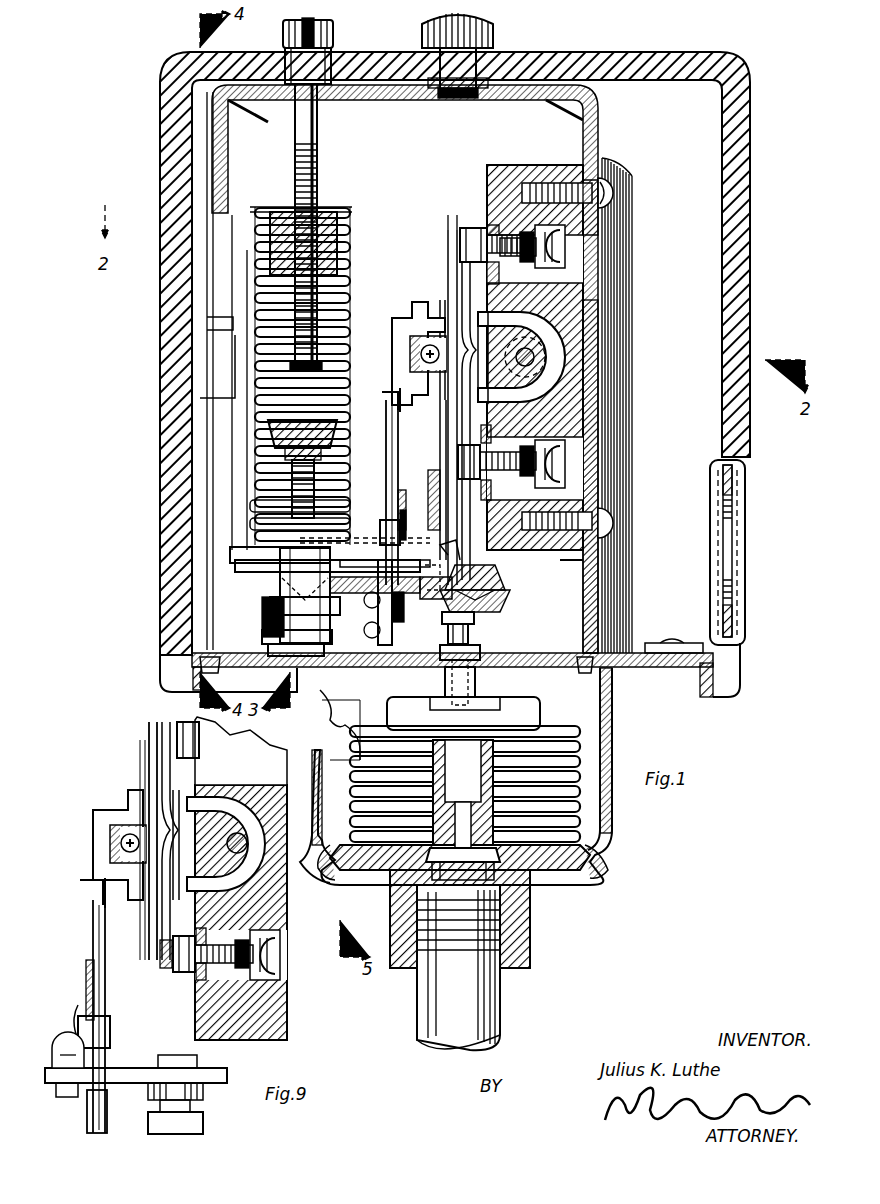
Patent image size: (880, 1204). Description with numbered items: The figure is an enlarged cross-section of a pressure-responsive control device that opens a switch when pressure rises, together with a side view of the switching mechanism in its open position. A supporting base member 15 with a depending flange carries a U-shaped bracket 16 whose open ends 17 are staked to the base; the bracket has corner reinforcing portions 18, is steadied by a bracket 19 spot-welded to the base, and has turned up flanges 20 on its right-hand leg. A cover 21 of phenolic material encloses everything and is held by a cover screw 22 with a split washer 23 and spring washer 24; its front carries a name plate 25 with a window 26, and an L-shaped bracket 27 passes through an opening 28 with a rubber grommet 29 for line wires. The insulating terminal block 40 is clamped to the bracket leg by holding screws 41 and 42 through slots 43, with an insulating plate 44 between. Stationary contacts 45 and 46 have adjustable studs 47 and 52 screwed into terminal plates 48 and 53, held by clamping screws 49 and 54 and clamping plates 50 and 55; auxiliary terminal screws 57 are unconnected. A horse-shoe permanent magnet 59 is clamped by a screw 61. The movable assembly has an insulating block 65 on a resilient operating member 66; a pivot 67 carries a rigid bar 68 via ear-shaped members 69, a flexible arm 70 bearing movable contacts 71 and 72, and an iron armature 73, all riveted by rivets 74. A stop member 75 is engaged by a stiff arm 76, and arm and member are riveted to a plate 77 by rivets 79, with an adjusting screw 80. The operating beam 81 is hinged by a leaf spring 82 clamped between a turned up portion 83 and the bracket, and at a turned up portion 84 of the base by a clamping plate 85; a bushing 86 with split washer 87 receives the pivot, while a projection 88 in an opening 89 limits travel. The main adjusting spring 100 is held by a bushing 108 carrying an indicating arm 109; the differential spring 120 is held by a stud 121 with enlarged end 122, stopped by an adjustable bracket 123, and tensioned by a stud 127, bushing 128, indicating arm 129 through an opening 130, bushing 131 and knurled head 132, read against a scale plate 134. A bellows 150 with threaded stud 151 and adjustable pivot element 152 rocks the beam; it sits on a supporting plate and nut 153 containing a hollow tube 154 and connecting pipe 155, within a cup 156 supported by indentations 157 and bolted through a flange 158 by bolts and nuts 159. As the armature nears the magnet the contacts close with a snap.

In FIG. 1, the supporting base member 15 is at (310, 665).
In FIG. 1, the U-shaped bracket 16 is at (392, 100).
In FIG. 1, the open ends of bracket 17 is at (215, 672).
In FIG. 1, the reinforcing portions 18 is at (252, 112).
In FIG. 1, the bracket 19 is at (575, 560).
In FIG. 1, the turned up flanges 20 is at (612, 323).
In FIG. 1, the housing or cover 21 is at (660, 58).
In FIG. 1, the cover screw 22 is at (470, 22).
In FIG. 1, the split washer 23 is at (448, 98).
In FIG. 1, the spring washer 24 is at (492, 58).
In FIG. 1, the ornamental name plate 25 is at (172, 120).
In FIG. 1, the window 26 is at (200, 330).
In FIG. 1, the L-shaped bracket 27 is at (696, 645).
In FIG. 1, the opening 28 is at (748, 462).
In FIG. 1, the rubber grommet 29 is at (735, 526).
In FIG. 1, the terminal block 40 is at (524, 170).
In FIG. 9, the terminal block 40 is at (272, 1020).
In FIG. 1, the holding screw 41 is at (606, 190).
In FIG. 1, the holding screw 42 is at (606, 526).
In FIG. 1, the enlarged openings or slots 43 is at (598, 218).
In FIG. 1, the insulating plate 44 is at (585, 168).
In FIG. 1, the stationary contact 45 is at (462, 228).
In FIG. 9, the stationary contact 45 is at (200, 740).
In FIG. 1, the stationary contact 46 is at (462, 480).
In FIG. 9, the stationary contact 46 is at (178, 974).
In FIG. 1, the threaded adjustable stud 47 is at (495, 232).
In FIG. 1, the terminal plate 48 is at (487, 272).
In FIG. 1, the clamping screw 49 is at (566, 248).
In FIG. 1, the clamping plate 50 is at (575, 275).
In FIG. 1, the threaded stud 52 is at (472, 520).
In FIG. 1, the terminal plate 53 is at (481, 470).
In FIG. 9, the terminal plate 53 is at (198, 980).
In FIG. 1, the clamping screw 54 is at (566, 455).
In FIG. 9, the clamping screw 54 is at (280, 945).
In FIG. 1, the clamping plate 55 is at (575, 478).
In FIG. 9, the clamping plate 55 is at (255, 975).
In FIG. 1, the auxiliary terminal screws 57 is at (520, 388).
In FIG. 1, the permanent magnet 59 is at (517, 372).
In FIG. 9, the permanent magnet 59 is at (232, 860).
In FIG. 1, the screw 61 is at (536, 357).
In FIG. 1, the insulating supporting block 65 is at (398, 320).
In FIG. 9, the insulating supporting block 65 is at (104, 808).
In FIG. 1, the resilient operating member 66 is at (392, 470).
In FIG. 9, the resilient operating member 66 is at (105, 945).
In FIG. 1, the pivot 67 is at (421, 356).
In FIG. 9, the pivot 67 is at (122, 840).
In FIG. 1, the rigid bar 68 is at (448, 245).
In FIG. 9, the rigid bar 68 is at (150, 726).
In FIG. 1, the ear-shaped members 69 is at (412, 346).
In FIG. 9, the ear-shaped members 69 is at (112, 850).
In FIG. 1, the flexible contact supporting arm 70 is at (462, 282).
In FIG. 9, the flexible contact supporting arm 70 is at (163, 760).
In FIG. 1, the movable contact 71 is at (448, 232).
In FIG. 9, the movable contact 71 is at (180, 725).
In FIG. 1, the movable contact 72 is at (440, 490).
In FIG. 9, the movable contact 72 is at (162, 968).
In FIG. 1, the iron armature 73 is at (450, 420).
In FIG. 9, the iron armature 73 is at (180, 822).
In FIG. 1, the rivets 74 is at (517, 356).
In FIG. 1, the stop member 75 is at (382, 396).
In FIG. 9, the stop member 75 is at (80, 884).
In FIG. 1, the stiff arm 76 is at (386, 452).
In FIG. 9, the stiff arm 76 is at (93, 933).
In FIG. 1, the plate 77 is at (420, 520).
In FIG. 1, the rivets 79 is at (382, 525).
In FIG. 9, the rivets 79 is at (80, 1025).
In FIG. 1, the adjusting screw 80 is at (345, 594).
In FIG. 9, the operating beam 81 is at (140, 1058).
In FIG. 1, the leaf spring hinge 82 is at (434, 600).
In FIG. 9, the leaf spring hinge 82 is at (108, 1092).
In FIG. 1, the turned up portion 83 is at (406, 505).
In FIG. 9, the turned up portion 83 is at (90, 990).
In FIG. 1, the turned up portion of base plate 84 is at (378, 635).
In FIG. 1, the clamping plate 85 is at (396, 636).
In FIG. 1, the bushing 86 is at (505, 600).
In FIG. 1, the split washer 87 is at (490, 580).
In FIG. 1, the projection 88 is at (262, 620).
In FIG. 1, the opening 89 is at (280, 585).
In FIG. 1, the main adjusting spring 100 is at (256, 404).
In FIG. 1, the bushing 108 is at (285, 212).
In FIG. 1, the indicating arm 109 is at (233, 300).
In FIG. 1, the differential adjusting spring 120 is at (255, 350).
In FIG. 1, the stud 121 is at (292, 490).
In FIG. 1, the enlarged end 122 is at (275, 430).
In FIG. 1, the adjustable bracket 123 is at (232, 552).
In FIG. 1, the adjustable stud 127 is at (318, 130).
In FIG. 1, the bushing 128 is at (325, 212).
In FIG. 1, the indicating arm 129 is at (300, 368).
In FIG. 1, the opening 130 is at (233, 262).
In FIG. 1, the bushing 131 is at (325, 60).
In FIG. 1, the knurled and slotted head 132 is at (318, 20).
In FIG. 1, the indicating scale plate 134 is at (290, 456).
In FIG. 1, the bellows 150 is at (582, 828).
In FIG. 1, the threaded stud 151 is at (478, 678).
In FIG. 1, the adjustable pivot element 152 is at (476, 625).
In FIG. 9, the adjustable pivot element 152 is at (200, 1103).
In FIG. 1, the supporting plate and connecting nut 153 is at (525, 912).
In FIG. 1, the hollow tube 154 is at (468, 750).
In FIG. 1, the connecting pipe 155 is at (470, 985).
In FIG. 1, the supporting and enclosing cup 156 is at (612, 800).
In FIG. 1, the indentations 157 is at (608, 866).
In FIG. 1, the flange 158 is at (390, 705).
In FIG. 1, the bolts and nuts 159 is at (345, 698).